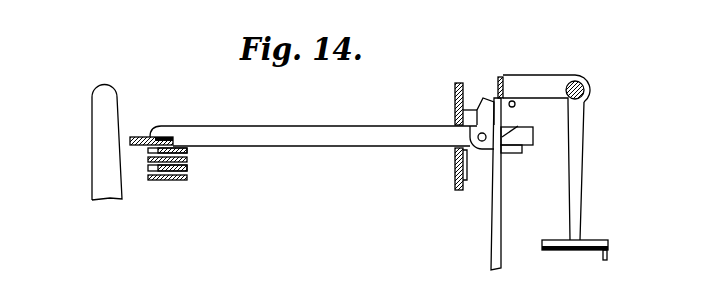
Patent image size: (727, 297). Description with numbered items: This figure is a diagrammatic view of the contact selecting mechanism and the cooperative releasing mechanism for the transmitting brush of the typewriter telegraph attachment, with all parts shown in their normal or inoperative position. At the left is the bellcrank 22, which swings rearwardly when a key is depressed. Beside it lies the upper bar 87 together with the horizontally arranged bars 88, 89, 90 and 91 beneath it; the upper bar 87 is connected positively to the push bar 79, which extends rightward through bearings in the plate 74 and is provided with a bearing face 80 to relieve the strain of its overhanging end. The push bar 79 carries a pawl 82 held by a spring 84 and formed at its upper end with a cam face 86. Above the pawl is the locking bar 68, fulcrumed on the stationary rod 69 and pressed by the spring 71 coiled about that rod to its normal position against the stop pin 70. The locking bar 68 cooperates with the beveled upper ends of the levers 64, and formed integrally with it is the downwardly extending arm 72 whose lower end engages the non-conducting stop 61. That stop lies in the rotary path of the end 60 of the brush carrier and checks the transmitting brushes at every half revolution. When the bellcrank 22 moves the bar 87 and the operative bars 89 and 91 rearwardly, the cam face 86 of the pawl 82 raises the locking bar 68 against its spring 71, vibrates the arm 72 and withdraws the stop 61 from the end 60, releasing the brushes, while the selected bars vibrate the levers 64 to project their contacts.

The bellcrank 22 is at (102, 162).
The end of the brush arm 60 is at (610, 252).
The non-conducting stop 61 is at (594, 242).
The lever 64 is at (491, 216).
The locking bar 68 is at (500, 77).
The stationary rod 69 is at (585, 93).
The stop pin 70 is at (516, 105).
The spring 71 is at (548, 83).
The downwardly extending arm 72 is at (579, 150).
The plate 74 is at (455, 165).
The push bar 79 is at (333, 131).
The bearing face 80 is at (511, 154).
The pawl 82 is at (475, 108).
The spring 84 is at (533, 132).
The cam face 86 is at (483, 113).
The upper bar 87 is at (137, 137).
The horizontally arranged bar 88 is at (188, 150).
The horizontally arranged bar 89 is at (188, 160).
The horizontally arranged bar 90 is at (188, 169).
The horizontally arranged bar 91 is at (168, 181).